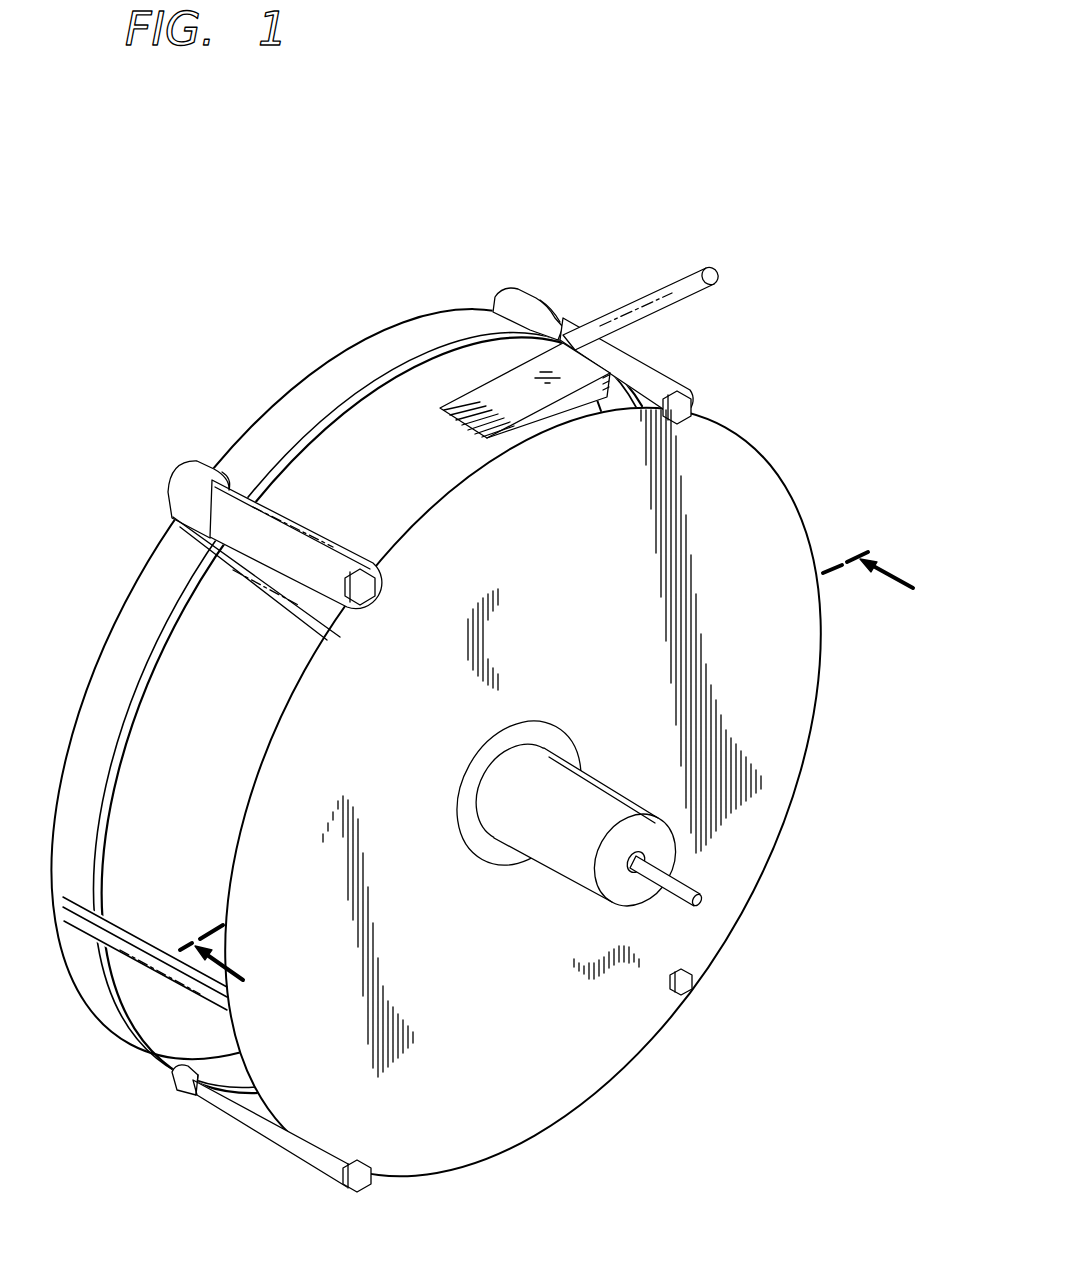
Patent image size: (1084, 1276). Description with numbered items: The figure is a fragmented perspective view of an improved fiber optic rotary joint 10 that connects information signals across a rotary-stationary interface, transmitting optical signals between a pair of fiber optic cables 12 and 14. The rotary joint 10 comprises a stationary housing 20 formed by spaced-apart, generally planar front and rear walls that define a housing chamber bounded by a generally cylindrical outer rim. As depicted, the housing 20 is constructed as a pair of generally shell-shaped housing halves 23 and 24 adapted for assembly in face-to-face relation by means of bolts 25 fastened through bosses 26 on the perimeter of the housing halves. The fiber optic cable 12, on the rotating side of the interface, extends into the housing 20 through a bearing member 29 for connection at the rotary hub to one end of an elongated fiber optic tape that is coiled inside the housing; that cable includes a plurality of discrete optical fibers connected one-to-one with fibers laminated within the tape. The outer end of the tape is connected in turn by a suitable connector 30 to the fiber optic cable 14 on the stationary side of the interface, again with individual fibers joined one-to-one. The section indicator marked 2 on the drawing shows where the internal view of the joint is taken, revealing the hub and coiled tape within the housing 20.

The fiber optic rotary joint 10 is at (272, 316).
The fiber optic cable 12 is at (704, 887).
The fiber optic cable 14 is at (694, 292).
The stationary housing 20 is at (134, 840).
The housing half 23 is at (180, 680).
The housing half 24 is at (134, 620).
The bolts 25 is at (374, 587).
The bosses 26 is at (194, 490).
The bearing member 29 is at (567, 855).
The connector 30 is at (560, 355).
The section line 2 is at (546, 748).